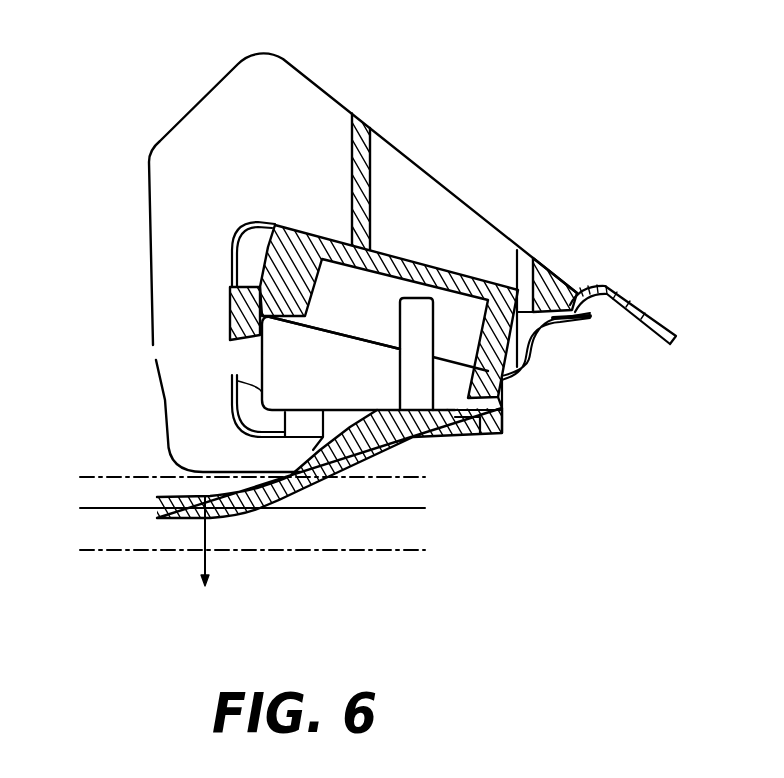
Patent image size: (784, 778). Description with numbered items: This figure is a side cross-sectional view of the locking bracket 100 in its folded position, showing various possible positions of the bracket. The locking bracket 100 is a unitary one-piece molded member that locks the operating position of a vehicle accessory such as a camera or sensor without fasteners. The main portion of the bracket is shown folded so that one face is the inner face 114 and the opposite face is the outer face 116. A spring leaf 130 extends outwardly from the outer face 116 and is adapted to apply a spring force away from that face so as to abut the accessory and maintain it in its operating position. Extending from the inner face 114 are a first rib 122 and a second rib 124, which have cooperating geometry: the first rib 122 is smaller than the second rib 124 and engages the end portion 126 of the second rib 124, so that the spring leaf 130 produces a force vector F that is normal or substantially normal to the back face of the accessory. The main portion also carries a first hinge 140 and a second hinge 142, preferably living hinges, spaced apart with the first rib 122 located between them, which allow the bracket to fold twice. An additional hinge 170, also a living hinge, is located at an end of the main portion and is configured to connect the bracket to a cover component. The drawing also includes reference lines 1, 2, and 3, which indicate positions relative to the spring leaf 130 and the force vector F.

The locking bracket 100 is at (229, 138).
The inner face 114 is at (478, 292).
The outer face 116 is at (303, 228).
The first rib 122 is at (226, 313).
The second rib 124 is at (357, 335).
The end portion 126 is at (278, 356).
The spring leaf 130 is at (408, 443).
The first hinge 140 is at (233, 240).
The second hinge 142 is at (233, 412).
The additional hinge 170 is at (672, 328).
The reference plane 1 is at (242, 479).
The reference plane 2 is at (242, 514).
The reference plane 3 is at (242, 554).
The force vector F is at (208, 563).